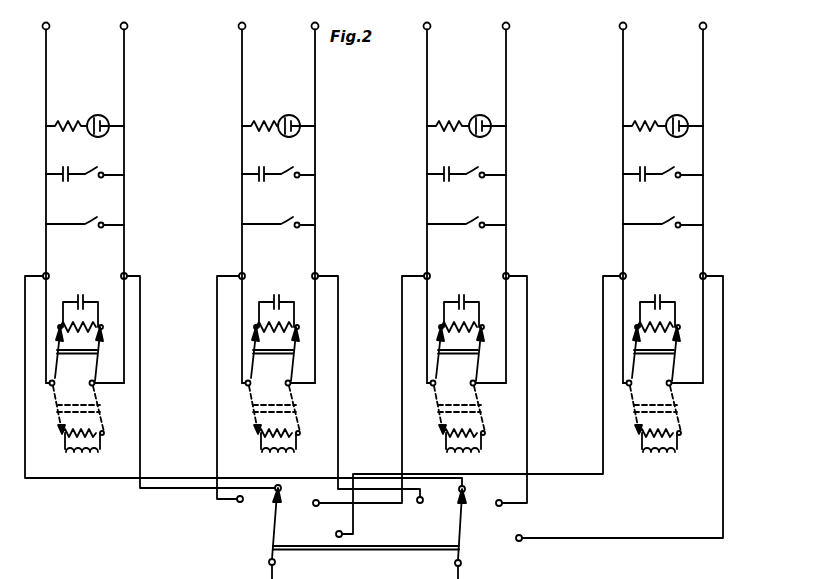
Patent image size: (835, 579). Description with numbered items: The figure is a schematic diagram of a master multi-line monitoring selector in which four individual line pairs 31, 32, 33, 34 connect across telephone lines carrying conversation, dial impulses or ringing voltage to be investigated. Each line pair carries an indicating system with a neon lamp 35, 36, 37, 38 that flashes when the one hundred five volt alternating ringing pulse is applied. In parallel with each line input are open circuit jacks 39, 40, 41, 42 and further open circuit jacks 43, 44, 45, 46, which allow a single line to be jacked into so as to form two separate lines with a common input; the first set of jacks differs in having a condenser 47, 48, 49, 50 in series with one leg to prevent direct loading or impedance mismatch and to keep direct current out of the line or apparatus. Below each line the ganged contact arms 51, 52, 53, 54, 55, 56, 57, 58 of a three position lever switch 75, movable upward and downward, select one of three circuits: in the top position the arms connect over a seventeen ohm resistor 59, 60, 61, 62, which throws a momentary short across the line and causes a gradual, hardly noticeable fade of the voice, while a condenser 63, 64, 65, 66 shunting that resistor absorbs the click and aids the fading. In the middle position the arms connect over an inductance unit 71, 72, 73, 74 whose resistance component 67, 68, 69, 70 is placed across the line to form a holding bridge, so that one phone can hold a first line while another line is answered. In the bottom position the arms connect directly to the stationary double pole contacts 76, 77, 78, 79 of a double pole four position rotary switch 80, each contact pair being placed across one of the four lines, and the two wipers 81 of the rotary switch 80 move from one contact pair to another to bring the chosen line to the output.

The line 31 is at (120, 26).
The line 32 is at (283, 243).
The line 33 is at (469, 244).
The line 34 is at (666, 249).
The neon lamp 35 is at (105, 117).
The neon lamp 36 is at (278, 113).
The neon lamp 37 is at (466, 113).
The neon lamp 38 is at (663, 113).
The open circuit jack 39 is at (105, 170).
The open circuit jack 40 is at (298, 161).
The open circuit jack 41 is at (486, 161).
The open circuit jack 42 is at (682, 161).
The open circuit jack 43 is at (104, 218).
The open circuit jack 44 is at (278, 209).
The open circuit jack 45 is at (466, 209).
The open circuit jack 46 is at (663, 208).
The condenser 47 is at (70, 182).
The condenser 48 is at (261, 185).
The condenser 49 is at (446, 185).
The condenser 50 is at (642, 186).
The contact arm 51 is at (55, 369).
The contact arm 52 is at (93, 376).
The contact arm 53 is at (267, 356).
The contact arm 54 is at (288, 361).
The contact arm 55 is at (452, 356).
The contact arm 56 is at (475, 363).
The contact arm 57 is at (648, 356).
The contact arm 58 is at (672, 360).
The resistor 59 is at (90, 322).
The resistor 60 is at (280, 306).
The resistor 61 is at (468, 306).
The resistor 62 is at (667, 307).
The condenser 63 is at (95, 282).
The condenser 64 is at (273, 300).
The condenser 65 is at (461, 297).
The condenser 66 is at (658, 297).
The resistance component 67 is at (88, 430).
The resistance component 68 is at (288, 410).
The resistance component 69 is at (474, 410).
The resistance component 70 is at (670, 410).
The inductance unit 71 is at (80, 455).
The inductance unit 72 is at (292, 449).
The inductance unit 73 is at (477, 450).
The inductance unit 74 is at (670, 455).
The three position lever switch 75 is at (85, 349).
The stationary double pole contact 76 is at (277, 485).
The stationary double pole contact 77 is at (242, 502).
The stationary double pole contact 78 is at (315, 500).
The stationary double pole contact 79 is at (338, 532).
The rotary switch 80 is at (370, 550).
The wipers 81 is at (283, 526).